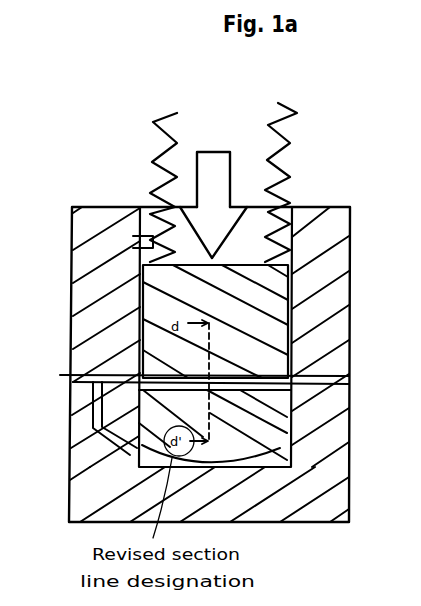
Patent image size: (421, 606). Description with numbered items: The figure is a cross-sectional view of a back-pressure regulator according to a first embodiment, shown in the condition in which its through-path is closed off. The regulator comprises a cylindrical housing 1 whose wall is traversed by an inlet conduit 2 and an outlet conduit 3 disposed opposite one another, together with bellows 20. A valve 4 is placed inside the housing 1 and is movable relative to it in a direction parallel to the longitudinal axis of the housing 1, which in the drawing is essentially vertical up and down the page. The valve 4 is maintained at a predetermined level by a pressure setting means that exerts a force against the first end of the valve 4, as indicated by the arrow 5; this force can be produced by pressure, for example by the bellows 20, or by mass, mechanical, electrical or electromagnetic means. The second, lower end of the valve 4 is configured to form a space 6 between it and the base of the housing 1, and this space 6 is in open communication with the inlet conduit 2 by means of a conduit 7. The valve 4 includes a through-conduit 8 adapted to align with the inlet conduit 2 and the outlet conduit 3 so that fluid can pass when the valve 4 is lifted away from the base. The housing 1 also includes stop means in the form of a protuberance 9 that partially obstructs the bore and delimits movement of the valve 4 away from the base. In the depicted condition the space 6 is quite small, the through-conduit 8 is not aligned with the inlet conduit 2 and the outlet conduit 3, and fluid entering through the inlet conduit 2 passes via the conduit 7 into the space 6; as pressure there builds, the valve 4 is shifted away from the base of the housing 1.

The cylindrical housing 1 is at (352, 322).
The inlet conduit 2 is at (60, 375).
The outlet conduit 3 is at (323, 378).
The valve 4 is at (255, 303).
The arrow 5 is at (213, 162).
The space 6 is at (264, 460).
The conduit 7 is at (128, 457).
The through-conduit 8 is at (245, 377).
The protuberance 9 is at (146, 243).
The bellows 20 is at (300, 117).